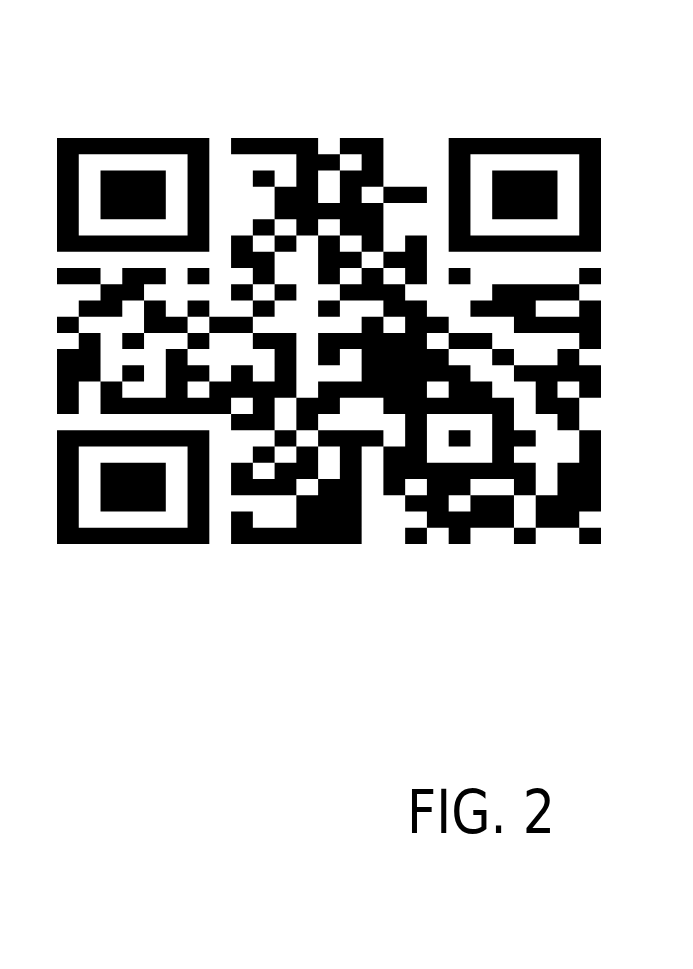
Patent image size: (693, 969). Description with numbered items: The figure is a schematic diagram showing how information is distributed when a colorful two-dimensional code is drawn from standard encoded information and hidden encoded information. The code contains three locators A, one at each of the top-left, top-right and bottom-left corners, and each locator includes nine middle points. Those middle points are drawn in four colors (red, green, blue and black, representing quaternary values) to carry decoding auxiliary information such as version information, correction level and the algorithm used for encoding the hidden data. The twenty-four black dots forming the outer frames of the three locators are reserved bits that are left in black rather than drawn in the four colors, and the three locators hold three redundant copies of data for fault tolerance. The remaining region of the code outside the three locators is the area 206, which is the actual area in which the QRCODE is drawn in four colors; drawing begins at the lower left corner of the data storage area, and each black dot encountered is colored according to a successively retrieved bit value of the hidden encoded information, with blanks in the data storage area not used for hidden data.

The area 206 is at (363, 475).